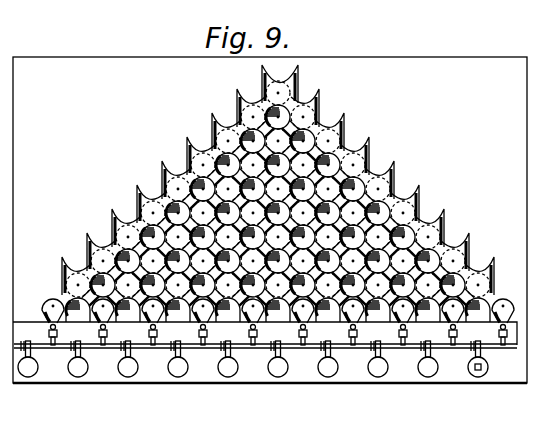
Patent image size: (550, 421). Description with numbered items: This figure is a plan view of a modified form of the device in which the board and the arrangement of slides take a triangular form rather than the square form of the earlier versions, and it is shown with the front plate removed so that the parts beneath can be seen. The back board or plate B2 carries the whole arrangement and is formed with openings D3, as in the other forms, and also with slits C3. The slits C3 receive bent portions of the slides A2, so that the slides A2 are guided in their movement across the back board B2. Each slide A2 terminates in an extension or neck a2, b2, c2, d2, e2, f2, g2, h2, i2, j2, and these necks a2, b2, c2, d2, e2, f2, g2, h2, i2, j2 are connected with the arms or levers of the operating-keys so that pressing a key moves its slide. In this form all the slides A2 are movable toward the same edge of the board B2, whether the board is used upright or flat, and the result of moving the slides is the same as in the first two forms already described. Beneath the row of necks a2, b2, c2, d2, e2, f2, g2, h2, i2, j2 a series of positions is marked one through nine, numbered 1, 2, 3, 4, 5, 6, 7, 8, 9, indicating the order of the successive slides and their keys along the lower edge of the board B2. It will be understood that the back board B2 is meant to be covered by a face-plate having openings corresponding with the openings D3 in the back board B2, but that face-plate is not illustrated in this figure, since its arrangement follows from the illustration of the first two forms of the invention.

The slides A2 is at (394, 148).
The back board or plate B2 is at (270, 220).
The slits C3 is at (110, 232).
The openings D3 is at (150, 199).
The extension or neck a2 is at (47, 321).
The extension or neck b2 is at (99, 328).
The extension or neck c2 is at (149, 328).
The extension or neck d2 is at (199, 328).
The extension or neck e2 is at (249, 328).
The extension or neck f2 is at (299, 328).
The extension or neck g2 is at (349, 328).
The extension or neck h2 is at (399, 328).
The extension or neck i2 is at (449, 328).
The extension or neck j2 is at (506, 328).
The receptacle 1 is at (28, 359).
The receptacle 2 is at (78, 359).
The receptacle 3 is at (128, 359).
The receptacle 4 is at (178, 359).
The receptacle 5 is at (228, 359).
The receptacle 6 is at (278, 359).
The receptacle 7 is at (328, 359).
The receptacle 8 is at (378, 359).
The receptacle 9 is at (428, 359).